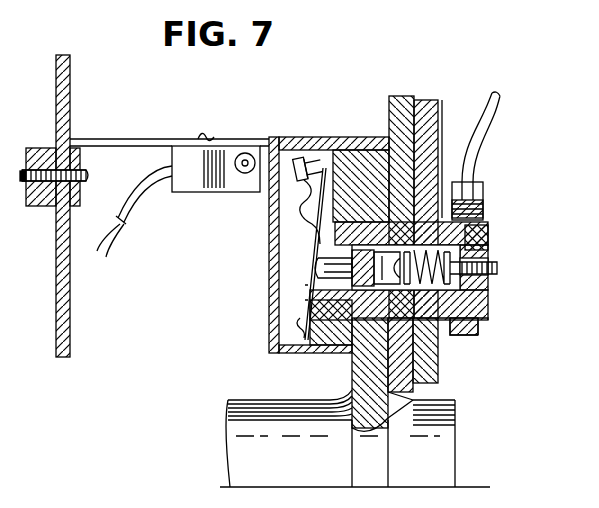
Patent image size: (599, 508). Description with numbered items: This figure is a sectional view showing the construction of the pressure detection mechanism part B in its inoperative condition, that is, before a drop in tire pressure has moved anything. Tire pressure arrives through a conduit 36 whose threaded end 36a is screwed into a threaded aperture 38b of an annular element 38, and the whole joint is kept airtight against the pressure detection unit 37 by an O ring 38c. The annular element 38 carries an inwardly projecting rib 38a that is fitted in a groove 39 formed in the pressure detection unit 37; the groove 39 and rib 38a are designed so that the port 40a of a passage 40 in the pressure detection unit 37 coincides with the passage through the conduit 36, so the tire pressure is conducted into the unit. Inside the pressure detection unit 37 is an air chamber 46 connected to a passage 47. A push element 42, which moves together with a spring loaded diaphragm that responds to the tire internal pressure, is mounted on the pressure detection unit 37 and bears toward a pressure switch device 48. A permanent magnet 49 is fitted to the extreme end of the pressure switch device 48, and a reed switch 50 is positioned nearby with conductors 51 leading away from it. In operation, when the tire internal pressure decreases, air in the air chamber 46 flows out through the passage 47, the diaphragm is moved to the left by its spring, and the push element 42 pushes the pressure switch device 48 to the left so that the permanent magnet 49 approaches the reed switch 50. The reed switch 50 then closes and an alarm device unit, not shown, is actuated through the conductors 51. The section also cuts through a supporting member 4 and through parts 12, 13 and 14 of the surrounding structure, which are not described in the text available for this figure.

The shaft 4 is at (447, 458).
The spring 12 is at (434, 290).
The piston 13 is at (386, 290).
The cylinder bore 14 is at (480, 292).
The conduit 36 is at (478, 147).
The threaded end 36a is at (483, 190).
The pressure detection unit 37 is at (479, 318).
The annular element 38 is at (456, 335).
The rib 38a is at (470, 336).
The threaded aperture 38b is at (483, 214).
The O ring 38c is at (488, 236).
The groove 39 is at (475, 334).
The passage 40 is at (372, 222).
The port 40a is at (497, 268).
The push element 42 is at (319, 268).
The air chamber 46 is at (332, 306).
The passage 47 is at (339, 298).
The pressure switch device 48 is at (302, 212).
The permanent magnet 49 is at (303, 158).
The reed switch 50 is at (196, 192).
The conductors 51 is at (108, 248).
The pressure detection mechanism part B is at (497, 275).